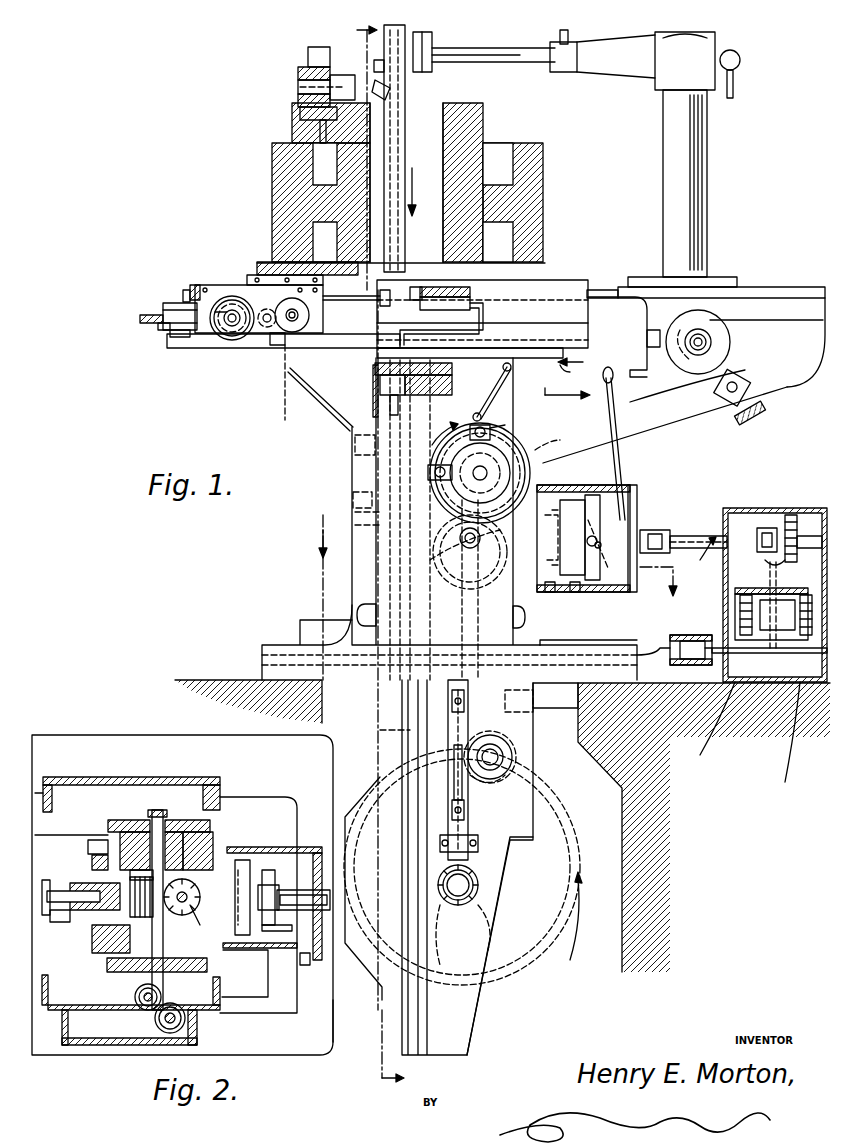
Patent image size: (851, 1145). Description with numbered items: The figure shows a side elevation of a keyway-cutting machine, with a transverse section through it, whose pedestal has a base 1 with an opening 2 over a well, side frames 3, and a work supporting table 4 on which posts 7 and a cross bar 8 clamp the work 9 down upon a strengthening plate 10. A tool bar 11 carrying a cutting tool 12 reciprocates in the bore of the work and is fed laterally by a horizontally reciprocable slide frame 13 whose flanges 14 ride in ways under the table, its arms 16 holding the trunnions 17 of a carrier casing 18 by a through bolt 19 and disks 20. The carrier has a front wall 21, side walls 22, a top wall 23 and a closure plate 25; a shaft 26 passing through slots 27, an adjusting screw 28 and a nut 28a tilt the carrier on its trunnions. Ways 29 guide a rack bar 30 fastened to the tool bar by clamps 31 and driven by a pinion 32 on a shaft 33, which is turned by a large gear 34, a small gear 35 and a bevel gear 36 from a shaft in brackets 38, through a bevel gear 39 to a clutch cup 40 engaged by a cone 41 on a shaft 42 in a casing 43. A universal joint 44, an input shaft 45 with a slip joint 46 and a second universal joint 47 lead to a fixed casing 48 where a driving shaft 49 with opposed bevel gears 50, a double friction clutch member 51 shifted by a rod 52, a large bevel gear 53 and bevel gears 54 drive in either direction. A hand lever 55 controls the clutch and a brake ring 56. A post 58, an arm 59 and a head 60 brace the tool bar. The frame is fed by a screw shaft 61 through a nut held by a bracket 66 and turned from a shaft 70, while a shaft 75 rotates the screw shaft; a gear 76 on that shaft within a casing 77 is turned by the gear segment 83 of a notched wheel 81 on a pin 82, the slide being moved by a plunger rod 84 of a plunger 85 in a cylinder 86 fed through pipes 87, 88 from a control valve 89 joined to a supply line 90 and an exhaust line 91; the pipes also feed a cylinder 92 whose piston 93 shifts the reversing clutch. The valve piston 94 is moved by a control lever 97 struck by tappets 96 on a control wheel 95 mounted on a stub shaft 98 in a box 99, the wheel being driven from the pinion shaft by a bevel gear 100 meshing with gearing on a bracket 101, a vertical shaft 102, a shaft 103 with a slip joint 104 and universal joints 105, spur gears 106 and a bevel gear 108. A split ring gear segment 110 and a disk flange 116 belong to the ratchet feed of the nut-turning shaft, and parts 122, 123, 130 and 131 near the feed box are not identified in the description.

In FIG. 1, the base 1 is at (270, 645).
In FIG. 2, the base 1 is at (300, 1058).
In FIG. 1, the opening 2 is at (498, 597).
In FIG. 2, the opening 2 is at (40, 835).
In FIG. 1, the side frames 3 is at (355, 468).
In FIG. 2, the side frames 3 is at (210, 777).
In FIG. 1, the work supporting table 4 is at (598, 268).
In FIG. 1, the anchoring posts 7 is at (300, 125).
In FIG. 1, the cross bar 8 is at (298, 72).
In FIG. 1, the work 9 is at (470, 119).
In FIG. 1, the plate 10 is at (263, 262).
In FIG. 1, the tool bar 11 is at (396, 133).
In FIG. 2, the tool bar 11 is at (63, 922).
In FIG. 1, the cutting tool 12 is at (390, 86).
In FIG. 1, the carrying slide frame 13 is at (655, 330).
In FIG. 1, the side rib or flange 14 is at (553, 278).
In FIG. 1, the downwardly extending arms 16 is at (395, 502).
In FIG. 2, the downwardly extending arms 16 is at (108, 826).
In FIG. 1, the trunnion 17 is at (455, 580).
In FIG. 2, the trunnion 17 is at (176, 832).
In FIG. 1, the carrier casing 18 is at (815, 375).
In FIG. 2, the carrier casing 18 is at (213, 840).
In FIG. 1, the through bolt 19 is at (462, 530).
In FIG. 2, the through bolt 19 is at (157, 810).
In FIG. 2, the caps or disks 20 is at (130, 832).
In FIG. 2, the front end wall 21 is at (92, 862).
In FIG. 1, the side walls 22 is at (790, 393).
In FIG. 2, the side walls 22 is at (245, 797).
In FIG. 1, the top wall 23 is at (770, 287).
In FIG. 1, the detachable plate 25 is at (513, 757).
In FIG. 2, the detachable plate 25 is at (200, 888).
In FIG. 1, the bolt or shaft 26 is at (712, 345).
In FIG. 1, the slots or openings 27 is at (705, 318).
In FIG. 1, the adjusting screw 28 is at (745, 375).
In FIG. 1, the nut 28a is at (750, 423).
In FIG. 1, the ways 29 is at (412, 848).
In FIG. 2, the ways 29 is at (92, 850).
In FIG. 1, the rack bar 30 is at (380, 723).
In FIG. 2, the rack bar 30 is at (136, 890).
In FIG. 1, the clamps 31 is at (378, 520).
In FIG. 2, the clamps 31 is at (46, 893).
In FIG. 1, the pinion 32 is at (440, 950).
In FIG. 2, the pinion 32 is at (140, 917).
In FIG. 1, the transverse shaft 33 is at (478, 885).
In FIG. 1, the large gear 34 is at (520, 985).
In FIG. 1, the small gear 35 is at (510, 778).
In FIG. 1, the bevel gear 36 is at (512, 748).
In FIG. 1, the brackets 38 is at (520, 700).
In FIG. 1, the bevel gear 39 is at (548, 592).
In FIG. 2, the bevel gear 39 is at (201, 918).
In FIG. 1, the clutch cup 40 is at (575, 592).
In FIG. 2, the clutch cup 40 is at (270, 875).
In FIG. 1, the clutch cone 41 is at (592, 495).
In FIG. 2, the clutch cone 41 is at (300, 910).
In FIG. 1, the aligned shaft 42 is at (604, 549).
In FIG. 1, the small casing 43 is at (605, 570).
In FIG. 2, the small casing 43 is at (313, 847).
In FIG. 1, the universal joint 44 is at (655, 530).
In FIG. 2, the universal joint 44 is at (270, 922).
In FIG. 1, the power input shaft 45 is at (690, 536).
In FIG. 1, the slip joint 46 is at (705, 559).
In FIG. 1, the second universal joint 47 is at (767, 528).
In FIG. 1, the fixed casing 48 is at (810, 508).
In FIG. 1, the transverse driving shaft 49 is at (790, 682).
In FIG. 1, the opposed bevel gears 50 is at (742, 739).
In FIG. 1, the double friction clutch member 51 is at (760, 682).
In FIG. 1, the shifting rod 52 is at (745, 682).
In FIG. 1, the large bevel gear 53 is at (750, 590).
In FIG. 1, the meshing bevel gears 54 is at (792, 515).
In FIG. 1, the hand lever 55 is at (619, 447).
In FIG. 2, the hand lever 55 is at (305, 965).
In FIG. 1, the friction brake ring 56 is at (563, 500).
In FIG. 2, the friction brake ring 56 is at (243, 860).
In FIG. 1, the post 58 is at (700, 200).
In FIG. 1, the arm 59 is at (512, 62).
In FIG. 1, the head 60 is at (432, 40).
In FIG. 1, the screw shaft 61 is at (140, 318).
In FIG. 1, the bracket 66 is at (162, 330).
In FIG. 1, the shaft 70 is at (228, 332).
In FIG. 1, the shaft 75 is at (275, 345).
In FIG. 1, the gear 76 is at (262, 327).
In FIG. 1, the box or casing 77 is at (240, 285).
In FIG. 1, the notched wheel 81 is at (312, 350).
In FIG. 1, the pin 82 is at (300, 318).
In FIG. 1, the gear segment 83 is at (284, 410).
In FIG. 1, the plunger rod 84 is at (345, 300).
In FIG. 1, the plunger 85 is at (417, 287).
In FIG. 1, the cylinder 86 is at (450, 287).
In FIG. 1, the fluid pipe 87 is at (380, 335).
In FIG. 1, the fluid pipe 88 is at (483, 313).
In FIG. 1, the slide control valve 89 is at (375, 380).
In FIG. 1, the supply line 90 is at (574, 368).
In FIG. 1, the exhaust line 91 is at (567, 401).
In FIG. 1, the cylinder 92 is at (690, 635).
In FIG. 1, the piston 93 is at (705, 641).
In FIG. 1, the sliding piston 94 is at (338, 416).
In FIG. 1, the control wheel 95 is at (520, 428).
In FIG. 1, the tappets 96 is at (435, 473).
In FIG. 1, the control lever 97 is at (512, 378).
In FIG. 1, the stub shaft 98 is at (478, 470).
In FIG. 1, the box or case 99 is at (370, 447).
In FIG. 1, the bevel gear 100 is at (455, 912).
In FIG. 1, the bracket 101 is at (478, 843).
In FIG. 1, the vertical shaft 102 is at (600, 640).
In FIG. 2, the vertical shaft 102 is at (161, 995).
In FIG. 1, the shaft 103 is at (468, 790).
In FIG. 1, the slip joint 104 is at (448, 750).
In FIG. 1, the universal joints 105 is at (465, 700).
In FIG. 1, the spur gears 106 is at (430, 570).
In FIG. 2, the spur gears 106 is at (155, 1018).
In FIG. 1, the bevel gear 108 is at (565, 440).
In FIG. 1, the split ring gear segment 110 is at (225, 322).
In FIG. 1, the disk flange 116 is at (235, 334).
In FIG. 1, the stop 122 is at (197, 285).
In FIG. 1, the stop 123 is at (187, 290).
In FIG. 1, the body 130 is at (175, 303).
In FIG. 1, the nut 131 is at (180, 338).